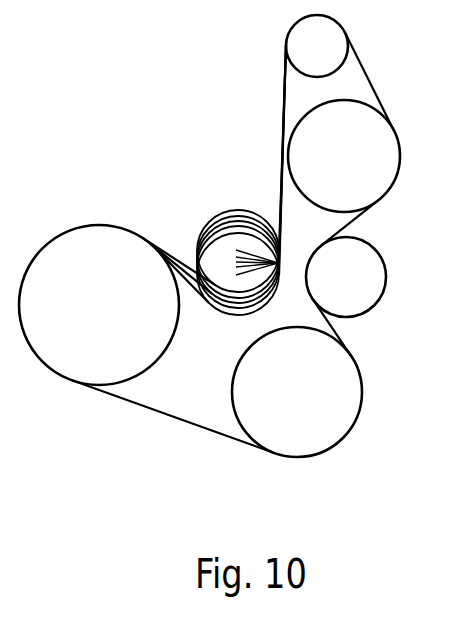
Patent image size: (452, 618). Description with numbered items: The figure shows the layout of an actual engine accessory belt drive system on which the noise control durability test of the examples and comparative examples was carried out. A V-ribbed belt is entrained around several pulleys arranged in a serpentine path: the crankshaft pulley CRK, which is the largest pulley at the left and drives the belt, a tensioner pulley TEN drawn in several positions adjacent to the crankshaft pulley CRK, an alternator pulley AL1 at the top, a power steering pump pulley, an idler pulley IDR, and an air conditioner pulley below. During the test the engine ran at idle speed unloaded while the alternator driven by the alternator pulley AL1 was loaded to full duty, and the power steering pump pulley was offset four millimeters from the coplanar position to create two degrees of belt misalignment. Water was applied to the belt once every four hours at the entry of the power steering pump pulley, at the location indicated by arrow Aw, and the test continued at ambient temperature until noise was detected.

The alternator pulley AL1 is at (317, 46).
The idler pulley IDR is at (346, 277).
The crankshaft pulley CRK is at (99, 305).
The tensioner pulley TEN is at (226, 257).
The arrow Aw is at (358, 99).